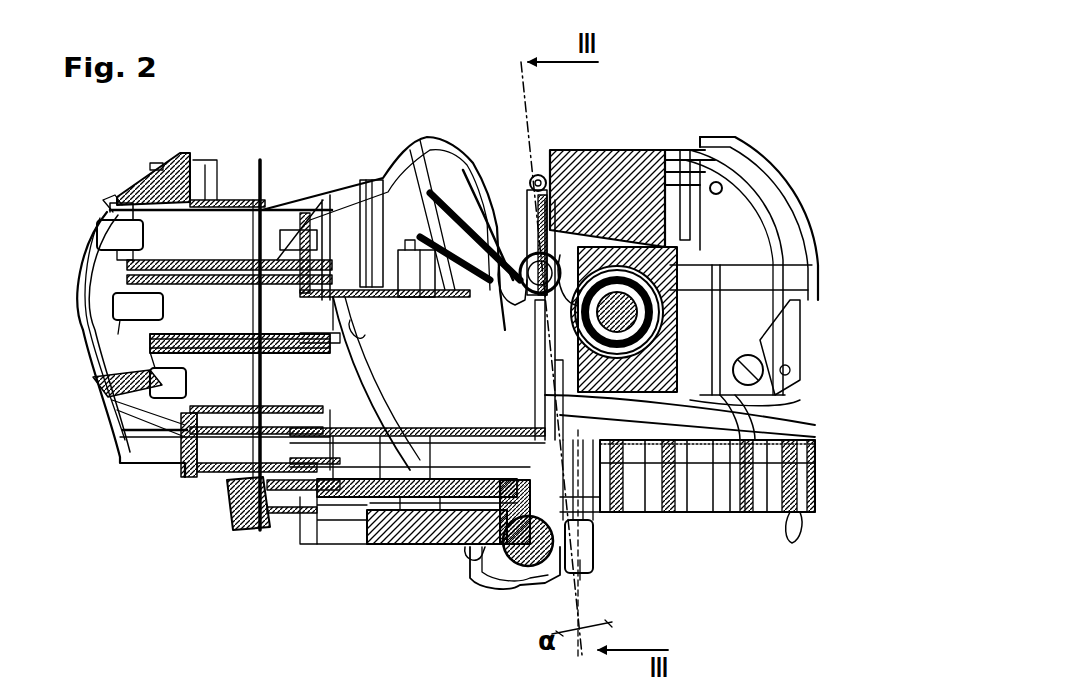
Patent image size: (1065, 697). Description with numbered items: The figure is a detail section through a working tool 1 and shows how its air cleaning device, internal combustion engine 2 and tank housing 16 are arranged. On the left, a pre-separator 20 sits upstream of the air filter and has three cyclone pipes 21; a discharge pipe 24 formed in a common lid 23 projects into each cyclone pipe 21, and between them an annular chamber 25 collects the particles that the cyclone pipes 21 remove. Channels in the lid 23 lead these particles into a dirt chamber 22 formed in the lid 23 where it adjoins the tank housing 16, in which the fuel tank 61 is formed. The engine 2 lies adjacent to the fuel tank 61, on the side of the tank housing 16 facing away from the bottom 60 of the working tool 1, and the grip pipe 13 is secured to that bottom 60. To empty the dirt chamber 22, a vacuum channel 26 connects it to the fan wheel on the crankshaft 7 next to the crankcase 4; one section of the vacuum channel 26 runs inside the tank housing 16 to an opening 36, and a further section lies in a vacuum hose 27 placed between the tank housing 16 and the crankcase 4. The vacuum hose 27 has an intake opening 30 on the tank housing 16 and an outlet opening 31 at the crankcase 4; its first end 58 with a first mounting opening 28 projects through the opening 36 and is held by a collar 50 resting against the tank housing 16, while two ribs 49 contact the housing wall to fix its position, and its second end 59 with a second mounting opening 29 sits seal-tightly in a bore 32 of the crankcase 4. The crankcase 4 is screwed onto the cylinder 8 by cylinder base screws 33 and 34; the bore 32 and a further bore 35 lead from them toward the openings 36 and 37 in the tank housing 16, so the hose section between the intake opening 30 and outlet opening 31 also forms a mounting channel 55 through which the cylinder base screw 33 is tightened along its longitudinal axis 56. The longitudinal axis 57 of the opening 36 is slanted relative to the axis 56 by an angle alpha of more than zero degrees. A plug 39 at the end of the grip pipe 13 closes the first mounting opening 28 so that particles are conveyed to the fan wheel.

The working tool 1 is at (765, 107).
The internal combustion engine 2 is at (690, 135).
The crankcase 4 is at (733, 237).
The crankshaft 7 is at (737, 270).
The cylinder 8 is at (636, 150).
The grip pipe 13 is at (507, 573).
The tank housing 16 is at (787, 510).
The pre-separator 20 is at (234, 152).
The cyclone pipes 21 is at (250, 330).
The dirt chamber 22 is at (143, 455).
The lid 23 is at (97, 283).
The discharge pipes 24 is at (92, 270).
The annular chamber 25 is at (112, 205).
The vacuum channel 26 is at (445, 390).
The vacuum hose 27 is at (407, 545).
The first mounting opening 28 is at (590, 505).
The second mounting opening 29 is at (497, 345).
The intake opening 30 is at (487, 527).
The outlet opening 31 is at (790, 388).
The bore 32 is at (585, 205).
The cylinder base screw 33 is at (515, 200).
The cylinder base screw 34 is at (723, 193).
The bore 35 is at (800, 340).
The opening 36 is at (800, 455).
The opening 37 is at (735, 513).
The plug 39 is at (597, 540).
The ribs 49 is at (455, 545).
The collar 50 is at (620, 497).
The mounting channel 55 is at (790, 423).
The longitudinal axis 56 is at (587, 603).
The longitudinal axis 57 is at (573, 610).
The first end 58 is at (718, 490).
The second end 59 is at (400, 153).
The bottom 60 is at (372, 545).
The fuel tank 61 is at (424, 346).